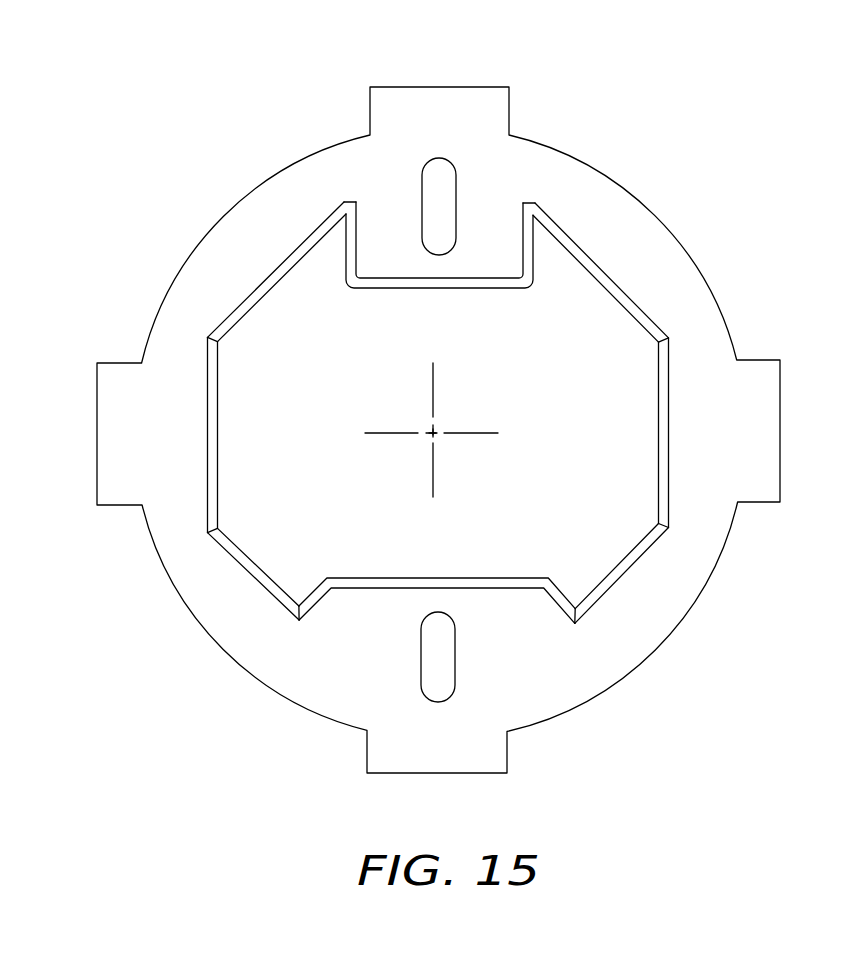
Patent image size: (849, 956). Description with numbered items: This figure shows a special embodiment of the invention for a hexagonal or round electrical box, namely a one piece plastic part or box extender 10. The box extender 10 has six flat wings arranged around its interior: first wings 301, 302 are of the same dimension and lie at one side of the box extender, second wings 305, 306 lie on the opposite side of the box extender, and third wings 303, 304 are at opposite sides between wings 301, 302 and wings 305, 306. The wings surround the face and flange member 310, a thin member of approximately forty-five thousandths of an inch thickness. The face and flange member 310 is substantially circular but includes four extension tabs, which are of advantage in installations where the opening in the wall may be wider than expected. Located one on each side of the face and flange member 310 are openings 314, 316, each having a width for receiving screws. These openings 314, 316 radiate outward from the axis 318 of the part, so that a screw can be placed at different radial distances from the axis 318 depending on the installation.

The box extender 10 is at (700, 98).
The first wing 301 is at (253, 288).
The first wing 302 is at (618, 283).
The third wing 303 is at (206, 435).
The third wing 304 is at (658, 430).
The second wing 305 is at (250, 582).
The second wing 306 is at (618, 585).
The face and flange member 310 is at (376, 680).
The opening 314 is at (456, 186).
The opening 316 is at (455, 658).
The axis 318 is at (468, 432).